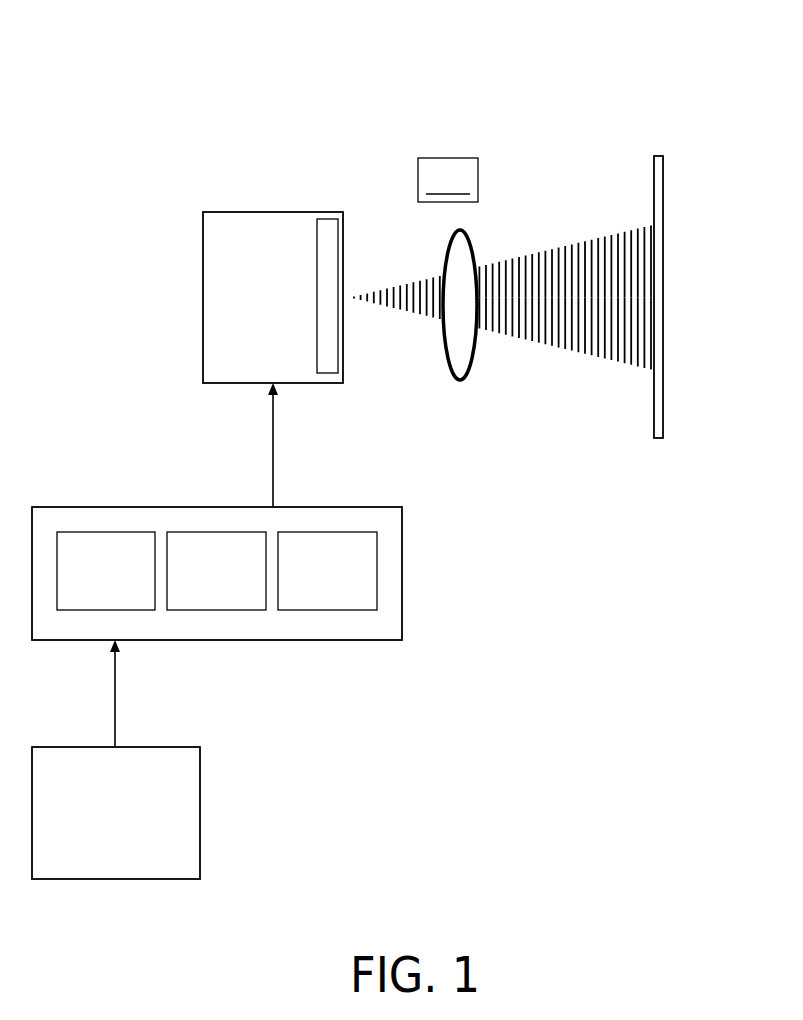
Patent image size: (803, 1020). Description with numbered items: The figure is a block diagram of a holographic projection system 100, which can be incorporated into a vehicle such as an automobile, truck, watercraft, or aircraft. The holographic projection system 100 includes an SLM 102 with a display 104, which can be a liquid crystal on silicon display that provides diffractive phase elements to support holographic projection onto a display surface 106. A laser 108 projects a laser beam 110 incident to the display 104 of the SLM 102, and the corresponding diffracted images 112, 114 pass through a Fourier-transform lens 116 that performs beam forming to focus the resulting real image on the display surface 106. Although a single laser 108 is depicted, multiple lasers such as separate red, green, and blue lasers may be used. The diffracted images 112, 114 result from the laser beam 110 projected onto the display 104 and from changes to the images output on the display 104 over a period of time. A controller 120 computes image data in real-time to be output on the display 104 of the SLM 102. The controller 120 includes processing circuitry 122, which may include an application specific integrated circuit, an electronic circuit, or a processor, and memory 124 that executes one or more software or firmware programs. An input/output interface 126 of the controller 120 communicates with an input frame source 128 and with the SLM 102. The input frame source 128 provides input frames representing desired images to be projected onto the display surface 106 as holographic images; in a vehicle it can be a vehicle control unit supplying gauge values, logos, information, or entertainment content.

The holographic projection system 100 is at (183, 100).
The SLM 102 is at (251, 309).
The display 104 is at (327, 226).
The display surface 106 is at (659, 162).
The laser 108 is at (357, 279).
The laser beam 110 is at (388, 250).
The diffracted image 112 is at (606, 237).
The diffracted image 114 is at (619, 362).
The Fourier-transform lens 116 is at (460, 380).
The controller 120 is at (217, 543).
The processing circuitry 122 is at (84, 584).
The memory 124 is at (194, 584).
The input/output interface 126 is at (305, 584).
The input frame source 128 is at (94, 826).